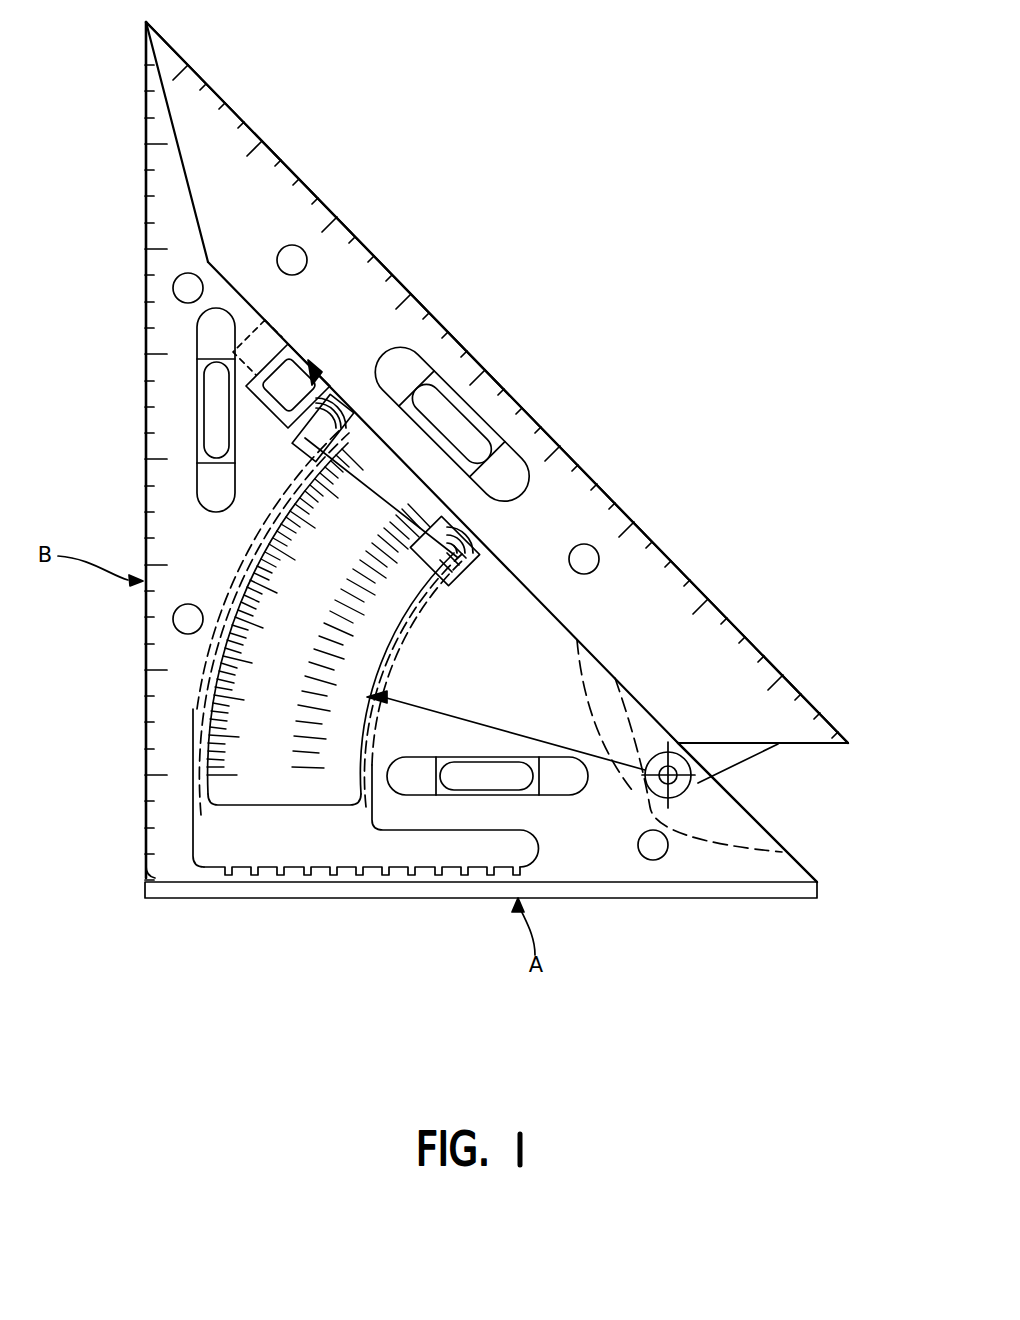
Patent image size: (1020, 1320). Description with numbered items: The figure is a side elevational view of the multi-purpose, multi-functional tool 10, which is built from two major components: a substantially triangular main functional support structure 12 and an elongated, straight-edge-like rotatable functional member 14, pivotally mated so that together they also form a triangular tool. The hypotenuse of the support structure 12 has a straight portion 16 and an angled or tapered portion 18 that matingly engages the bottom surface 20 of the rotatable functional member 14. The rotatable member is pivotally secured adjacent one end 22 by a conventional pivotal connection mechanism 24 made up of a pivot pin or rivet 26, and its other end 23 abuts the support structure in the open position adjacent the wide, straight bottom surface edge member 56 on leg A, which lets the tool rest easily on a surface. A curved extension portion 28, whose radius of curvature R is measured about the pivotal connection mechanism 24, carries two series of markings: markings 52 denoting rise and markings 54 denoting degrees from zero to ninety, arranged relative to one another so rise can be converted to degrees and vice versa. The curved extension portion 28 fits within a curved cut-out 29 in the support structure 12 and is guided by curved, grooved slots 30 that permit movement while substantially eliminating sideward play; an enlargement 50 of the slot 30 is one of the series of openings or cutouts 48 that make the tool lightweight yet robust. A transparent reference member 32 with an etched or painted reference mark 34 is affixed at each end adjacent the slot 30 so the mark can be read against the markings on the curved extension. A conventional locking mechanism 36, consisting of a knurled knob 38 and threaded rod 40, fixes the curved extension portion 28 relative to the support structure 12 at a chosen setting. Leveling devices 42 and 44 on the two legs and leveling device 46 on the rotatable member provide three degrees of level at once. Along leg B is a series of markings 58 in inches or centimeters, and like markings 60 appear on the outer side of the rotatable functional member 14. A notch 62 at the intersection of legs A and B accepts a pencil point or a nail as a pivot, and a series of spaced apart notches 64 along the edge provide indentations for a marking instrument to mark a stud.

The multi-purpose, multi-functional tool 10 is at (248, 940).
The main functional support structure 12 is at (466, 701).
The rotatable functional member 14 is at (645, 623).
The straight portion 16 is at (543, 612).
The angled or tapered portion 18 is at (200, 218).
The bottom surface 20 is at (188, 187).
The end of rotatable functional member 22 is at (733, 757).
The end of rotatable member 23 is at (812, 745).
The pivotal connection mechanism 24 is at (700, 783).
The pivot pin or rivet 26 is at (647, 797).
The curved extension portion 28 is at (307, 793).
The curved cut-out 29 is at (205, 714).
The curved, grooved slots 30 is at (233, 557).
The transparent reference member 32 is at (452, 523).
The reference mark 34 is at (400, 473).
The locking mechanism 36 is at (312, 372).
The knurled knob 38 is at (295, 388).
The threaded rod 40 is at (335, 400).
The leveling device 42 is at (572, 795).
The leveling device 44 is at (197, 398).
The leveling device 46 is at (481, 423).
The openings or cutouts 48 is at (173, 289).
The enlargement of slot 50 is at (383, 848).
The markings denoting rise 52 is at (398, 625).
The markings denoting degrees 54 is at (272, 515).
The bottom surface edge member 56 is at (370, 890).
The markings 58 is at (145, 778).
The markings 60 is at (412, 292).
The notch 62 is at (145, 868).
The spaced apart notches 64 is at (430, 868).